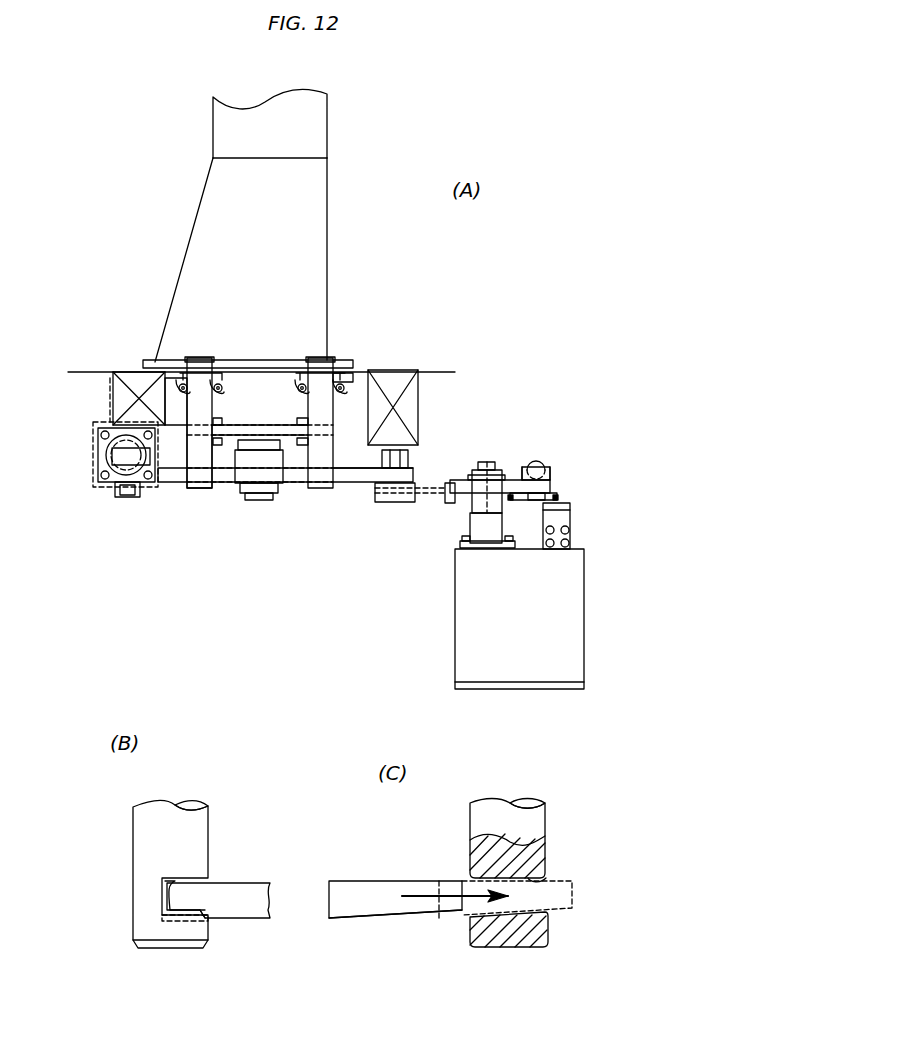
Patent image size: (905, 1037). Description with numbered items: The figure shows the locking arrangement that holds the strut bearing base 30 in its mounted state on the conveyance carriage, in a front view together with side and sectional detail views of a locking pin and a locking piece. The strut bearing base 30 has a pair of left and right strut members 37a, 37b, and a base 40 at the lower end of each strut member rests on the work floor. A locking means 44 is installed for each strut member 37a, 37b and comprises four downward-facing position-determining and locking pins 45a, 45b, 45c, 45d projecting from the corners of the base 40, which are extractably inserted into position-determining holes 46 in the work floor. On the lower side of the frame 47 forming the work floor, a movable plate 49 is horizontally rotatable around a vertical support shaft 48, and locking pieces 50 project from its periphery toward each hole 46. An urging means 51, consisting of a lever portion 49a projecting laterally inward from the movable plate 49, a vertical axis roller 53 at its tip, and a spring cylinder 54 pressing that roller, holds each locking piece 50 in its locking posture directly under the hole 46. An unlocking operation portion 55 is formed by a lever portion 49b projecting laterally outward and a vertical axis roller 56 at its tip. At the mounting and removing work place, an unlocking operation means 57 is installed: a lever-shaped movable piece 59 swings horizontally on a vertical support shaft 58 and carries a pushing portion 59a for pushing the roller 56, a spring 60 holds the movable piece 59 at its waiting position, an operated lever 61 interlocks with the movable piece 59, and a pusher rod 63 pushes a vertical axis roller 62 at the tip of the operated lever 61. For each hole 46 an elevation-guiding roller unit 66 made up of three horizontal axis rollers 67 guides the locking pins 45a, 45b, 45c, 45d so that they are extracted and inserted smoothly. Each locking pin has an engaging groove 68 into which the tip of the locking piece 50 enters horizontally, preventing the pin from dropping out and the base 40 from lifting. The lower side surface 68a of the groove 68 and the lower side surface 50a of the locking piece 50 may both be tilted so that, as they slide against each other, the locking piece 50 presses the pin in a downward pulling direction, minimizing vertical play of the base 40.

The strut bearing base 30 is at (333, 113).
The strut member 37a is at (312, 140).
The strut member 37b is at (336, 133).
The base 40 is at (253, 360).
The locking means 44 is at (198, 497).
The locking pin 45a is at (330, 624).
The locking pin 45b is at (330, 624).
The locking pin 45c is at (330, 624).
The locking pin 45d is at (200, 385).
The position-determining hole 46 is at (222, 360).
The frame 47 is at (120, 388).
The vertical support shaft 48 is at (263, 500).
The movable plate 49 is at (255, 483).
The lever portion 49a is at (168, 482).
The lever portion 49b is at (353, 482).
The locking piece 50 is at (220, 483).
The lower side surface 50a is at (220, 918).
The urging means 51 is at (90, 438).
The vertical axis roller 53 is at (118, 455).
The spring cylinder 54 is at (92, 473).
The unlocking operation portion 55 is at (393, 508).
The vertical axis roller 56 is at (402, 502).
The unlocking operation means 57 is at (542, 460).
The vertical support shaft 58 is at (487, 462).
The lever-shaped movable piece 59 is at (480, 507).
The pushing portion 59a is at (460, 482).
The spring 60 is at (522, 500).
The operated lever 61 is at (512, 480).
The vertical axis roller 62 is at (547, 480).
The pusher rod 63 is at (543, 467).
The elevation-guiding roller unit 66 is at (165, 382).
The horizontal axis roller 67 is at (218, 395).
The engaging groove 68 is at (180, 895).
The lower side surface 68a is at (185, 921).